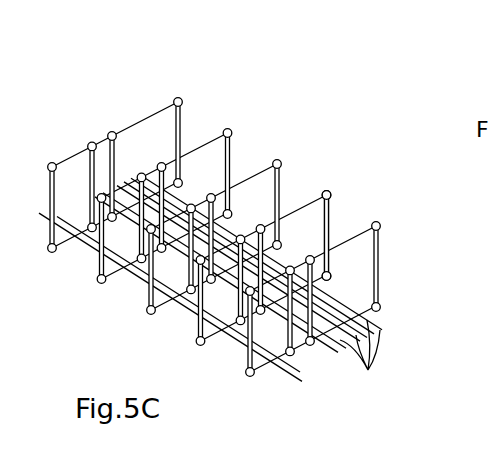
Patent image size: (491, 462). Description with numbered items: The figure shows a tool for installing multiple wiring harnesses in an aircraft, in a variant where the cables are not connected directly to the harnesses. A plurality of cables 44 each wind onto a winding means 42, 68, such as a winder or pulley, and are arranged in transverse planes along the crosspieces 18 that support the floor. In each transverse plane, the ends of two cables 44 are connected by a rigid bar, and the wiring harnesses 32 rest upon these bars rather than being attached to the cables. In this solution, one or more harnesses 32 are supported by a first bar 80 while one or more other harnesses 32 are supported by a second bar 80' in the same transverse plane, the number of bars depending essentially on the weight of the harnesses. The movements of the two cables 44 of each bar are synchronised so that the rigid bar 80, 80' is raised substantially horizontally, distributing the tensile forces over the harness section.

The crosspiece 18 is at (178, 97).
The wiring harness 32 is at (278, 378).
The winding means 42 is at (330, 177).
The winding means 68 is at (330, 177).
The cable 44 is at (330, 214).
The first rigid bar 80 is at (49, 248).
The second rigid bar 80' is at (242, 143).